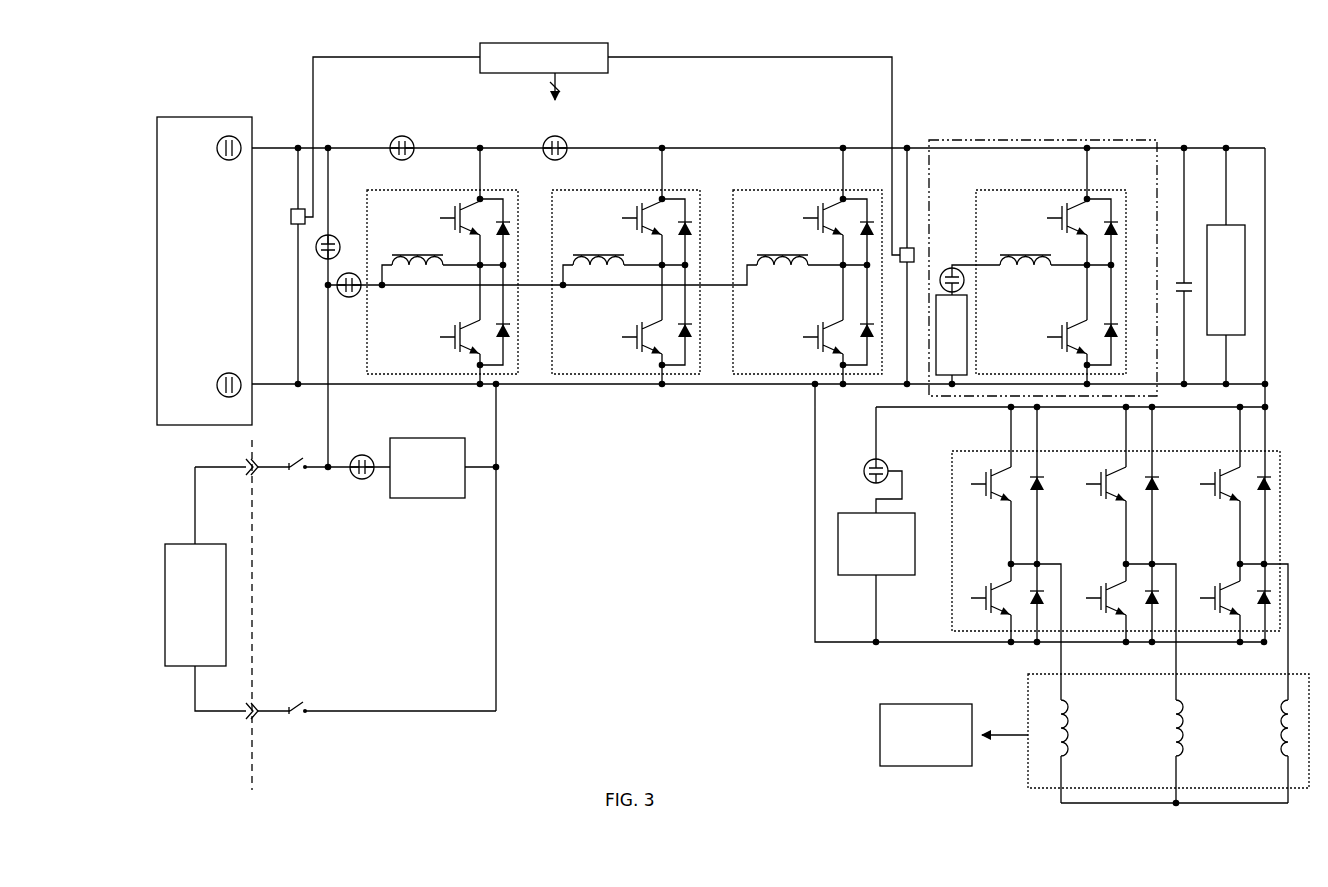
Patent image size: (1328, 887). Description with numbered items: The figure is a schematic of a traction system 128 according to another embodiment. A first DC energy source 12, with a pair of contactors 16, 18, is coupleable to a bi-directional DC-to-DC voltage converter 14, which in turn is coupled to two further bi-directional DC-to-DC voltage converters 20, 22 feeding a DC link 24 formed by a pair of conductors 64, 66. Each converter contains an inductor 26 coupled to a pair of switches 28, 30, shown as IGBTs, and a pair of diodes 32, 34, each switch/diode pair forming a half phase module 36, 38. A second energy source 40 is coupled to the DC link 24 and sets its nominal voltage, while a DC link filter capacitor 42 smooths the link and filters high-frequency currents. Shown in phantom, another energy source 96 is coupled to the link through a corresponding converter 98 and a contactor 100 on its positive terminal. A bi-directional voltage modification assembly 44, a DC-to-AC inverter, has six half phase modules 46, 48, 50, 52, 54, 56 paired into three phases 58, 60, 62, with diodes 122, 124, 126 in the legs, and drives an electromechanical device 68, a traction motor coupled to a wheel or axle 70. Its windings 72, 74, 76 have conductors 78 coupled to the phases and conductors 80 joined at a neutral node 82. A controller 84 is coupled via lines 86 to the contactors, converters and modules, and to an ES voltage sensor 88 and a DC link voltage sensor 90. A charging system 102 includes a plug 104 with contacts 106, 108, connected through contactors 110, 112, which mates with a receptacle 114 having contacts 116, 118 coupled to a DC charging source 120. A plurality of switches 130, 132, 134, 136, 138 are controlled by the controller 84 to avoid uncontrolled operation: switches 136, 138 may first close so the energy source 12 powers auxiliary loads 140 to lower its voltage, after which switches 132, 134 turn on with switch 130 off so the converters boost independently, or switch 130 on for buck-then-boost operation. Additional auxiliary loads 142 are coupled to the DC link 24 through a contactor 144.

The first DC energy source 12 is at (200, 117).
The bi-directional DC-to-DC voltage converter 14 is at (428, 190).
The contactor 16 is at (235, 162).
The contactor 18 is at (235, 372).
The bi-directional DC-to-DC voltage converter 20 is at (613, 190).
The bi-directional DC-to-DC voltage converter 22 is at (794, 190).
The DC link 24 is at (736, 148).
The inductor 26 is at (440, 272).
The switch 28 is at (438, 222).
The switch 30 is at (438, 341).
The diode 32 is at (503, 220).
The diode 34 is at (501, 318).
The half phase module 36 is at (450, 240).
The half phase module 38 is at (450, 356).
The second energy source 40 is at (1220, 225).
The DC link filter capacitor 42 is at (1178, 275).
The bi-directional voltage modification assembly 44 is at (952, 462).
The half phase module 46 is at (995, 502).
The half phase module 48 is at (990, 618).
The half phase module 50 is at (1110, 502).
The half phase module 52 is at (1105, 618).
The half phase module 54 is at (1218, 502).
The half phase module 56 is at (1220, 618).
The phase 58 is at (1008, 440).
The phase 60 is at (1123, 440).
The phase 62 is at (1237, 440).
The conductor 64 is at (704, 148).
The conductor 66 is at (766, 398).
The electromechanical device 68 is at (1028, 704).
The driving wheel or axle 70 is at (880, 730).
The winding 72 is at (1068, 712).
The winding 74 is at (1183, 716).
The winding 76 is at (1284, 712).
The conductor 78 is at (1064, 706).
The conductor 80 is at (1064, 762).
The neutral node 82 is at (1126, 803).
The controller 84 is at (497, 43).
The line 86 is at (558, 80).
The ES voltage sensor 88 is at (291, 212).
The DC link voltage sensor 90 is at (914, 252).
The energy source 96 is at (936, 330).
The bi-directional DC-to-DC voltage converter 98 is at (1037, 190).
The contactor 100 is at (940, 284).
The charging system 102 is at (398, 575).
The plug 104 is at (263, 760).
The contact 106 is at (254, 458).
The contact 108 is at (253, 718).
The contactor 110 is at (293, 468).
The contactor 112 is at (292, 712).
The receptacle 114 is at (245, 752).
The contact 116 is at (248, 472).
The contact 118 is at (247, 712).
The DC charging source 120 is at (177, 544).
The diode 122 is at (1046, 493).
The traction system 124 is at (1161, 493).
The phase C diode 126 is at (1273, 493).
The traction system 128 is at (912, 22).
The contactor 130 is at (398, 137).
The contactor 132 is at (552, 137).
The contactor 134 is at (348, 297).
The contactor 136 is at (362, 455).
The contactor 138 is at (333, 236).
The auxiliary load 140 is at (438, 438).
The auxiliary load 142 is at (876, 583).
The contactor 144 is at (864, 478).